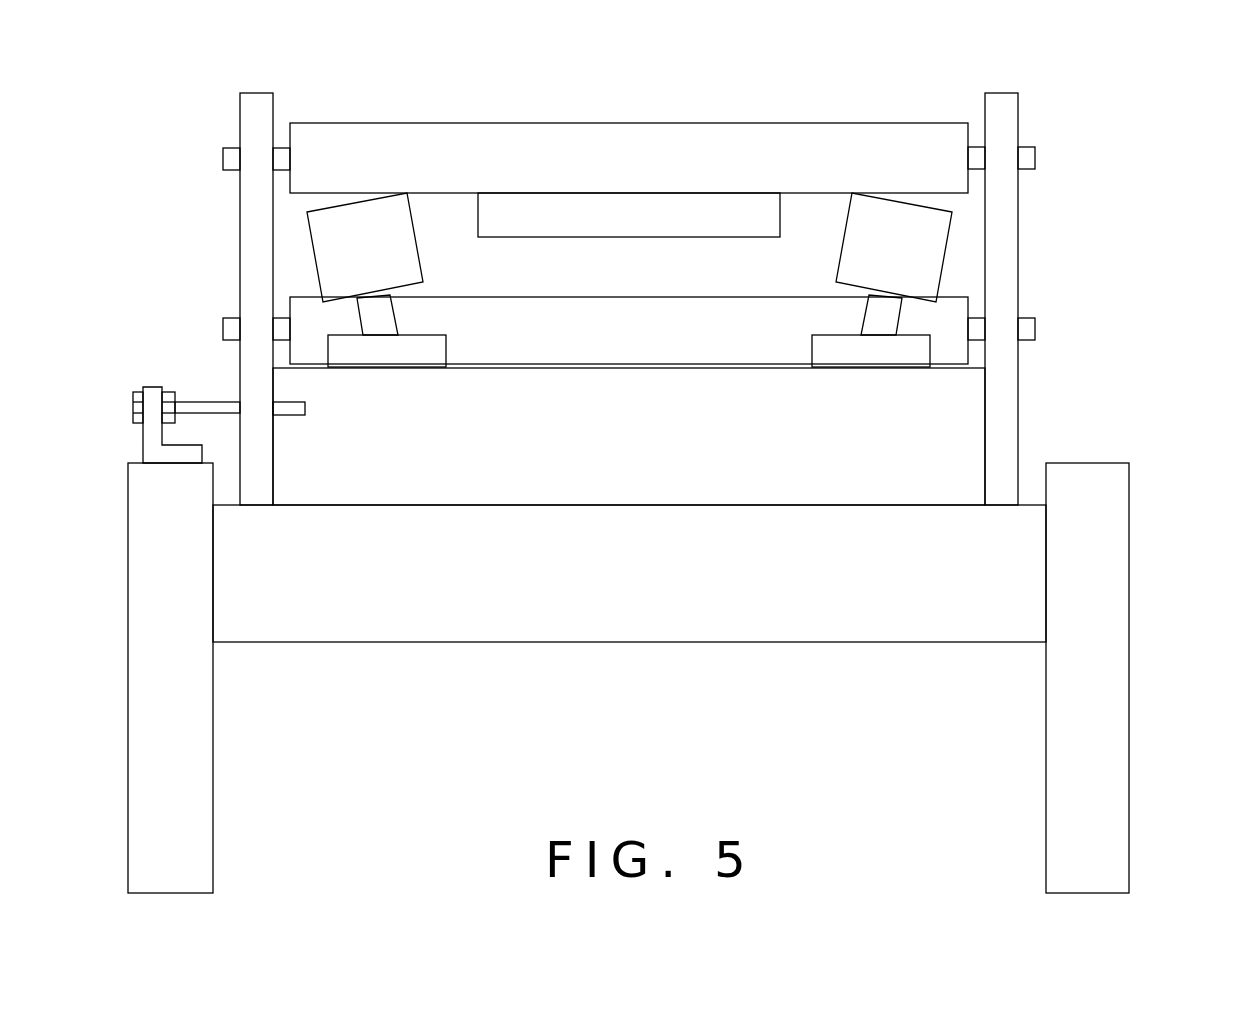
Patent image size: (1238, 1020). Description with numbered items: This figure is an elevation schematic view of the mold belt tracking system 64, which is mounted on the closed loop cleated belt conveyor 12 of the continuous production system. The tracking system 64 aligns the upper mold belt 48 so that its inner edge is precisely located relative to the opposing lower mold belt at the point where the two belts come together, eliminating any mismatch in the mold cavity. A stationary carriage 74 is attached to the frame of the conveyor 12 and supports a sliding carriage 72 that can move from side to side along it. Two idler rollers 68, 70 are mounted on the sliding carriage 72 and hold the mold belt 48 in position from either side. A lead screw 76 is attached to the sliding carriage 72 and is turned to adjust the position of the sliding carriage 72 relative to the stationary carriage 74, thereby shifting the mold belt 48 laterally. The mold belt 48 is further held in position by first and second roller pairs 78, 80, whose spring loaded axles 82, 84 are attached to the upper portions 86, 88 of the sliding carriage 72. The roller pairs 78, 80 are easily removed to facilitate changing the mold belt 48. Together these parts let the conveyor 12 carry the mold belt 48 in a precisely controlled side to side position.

The mold belt tracking system 64 is at (1118, 118).
The closed loop cleated belt conveyor 12 is at (1129, 572).
The stationary carriage 74 is at (835, 642).
The sliding carriage 72 is at (1018, 410).
The upper portion of sliding carriage 86 is at (240, 115).
The upper portion of sliding carriage 88 is at (1018, 97).
The first roller pair 78 is at (865, 123).
The spring loaded axle 82 is at (1035, 160).
The spring loaded axle 84 is at (1035, 326).
The second roller pair 80 is at (957, 293).
The upper mold belt 48 is at (640, 297).
The idler roller 68 is at (310, 240).
The idler roller 70 is at (948, 233).
The lead screw 76 is at (192, 402).